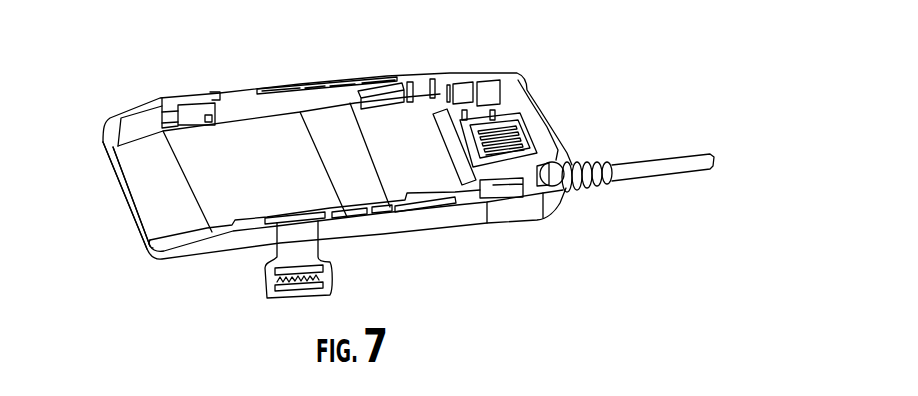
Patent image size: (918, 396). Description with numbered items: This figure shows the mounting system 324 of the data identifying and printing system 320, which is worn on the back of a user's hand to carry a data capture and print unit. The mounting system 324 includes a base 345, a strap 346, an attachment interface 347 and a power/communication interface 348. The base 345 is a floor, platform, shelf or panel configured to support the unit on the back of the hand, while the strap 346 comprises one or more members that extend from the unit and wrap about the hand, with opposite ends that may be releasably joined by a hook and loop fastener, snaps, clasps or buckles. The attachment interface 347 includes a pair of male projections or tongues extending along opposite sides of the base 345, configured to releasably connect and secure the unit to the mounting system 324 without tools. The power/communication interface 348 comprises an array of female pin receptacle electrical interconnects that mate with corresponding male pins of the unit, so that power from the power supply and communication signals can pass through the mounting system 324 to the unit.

The data identifying and printing system 320 is at (722, 128).
The mounting system 324 is at (600, 98).
The base 345 is at (145, 202).
The strap 346 is at (270, 256).
The attachment interface 347 is at (327, 82).
The power/communication interface 348 is at (503, 155).